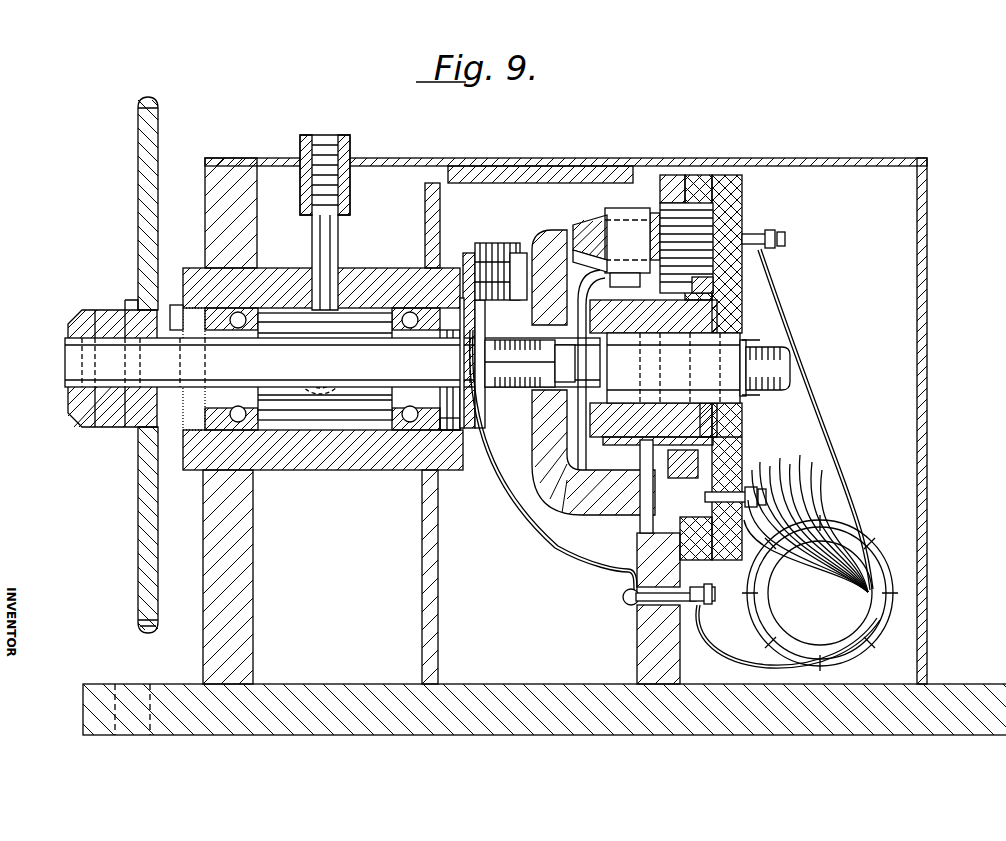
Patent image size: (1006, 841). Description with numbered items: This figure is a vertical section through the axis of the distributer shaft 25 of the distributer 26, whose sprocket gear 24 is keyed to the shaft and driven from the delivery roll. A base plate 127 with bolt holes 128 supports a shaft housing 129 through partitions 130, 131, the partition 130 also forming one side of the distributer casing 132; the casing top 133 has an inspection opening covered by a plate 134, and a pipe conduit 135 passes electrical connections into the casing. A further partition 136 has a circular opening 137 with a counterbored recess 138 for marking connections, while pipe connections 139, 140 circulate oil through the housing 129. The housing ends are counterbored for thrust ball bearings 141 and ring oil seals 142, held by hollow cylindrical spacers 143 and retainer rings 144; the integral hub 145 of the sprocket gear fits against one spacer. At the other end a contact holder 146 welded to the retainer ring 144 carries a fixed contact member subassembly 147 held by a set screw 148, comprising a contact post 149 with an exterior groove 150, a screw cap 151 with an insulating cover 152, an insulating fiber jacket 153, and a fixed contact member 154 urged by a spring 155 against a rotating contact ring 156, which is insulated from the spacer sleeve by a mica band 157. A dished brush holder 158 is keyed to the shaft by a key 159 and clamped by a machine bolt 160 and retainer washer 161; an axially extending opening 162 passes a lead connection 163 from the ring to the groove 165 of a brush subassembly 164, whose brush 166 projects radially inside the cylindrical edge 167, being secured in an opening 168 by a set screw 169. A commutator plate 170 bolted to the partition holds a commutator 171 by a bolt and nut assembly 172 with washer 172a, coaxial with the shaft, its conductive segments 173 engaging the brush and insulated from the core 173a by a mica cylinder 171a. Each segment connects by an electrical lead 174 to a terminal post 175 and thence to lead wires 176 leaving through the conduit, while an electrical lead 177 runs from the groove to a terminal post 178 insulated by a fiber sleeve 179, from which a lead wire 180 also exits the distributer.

The sprocket gear 24 is at (143, 143).
The distributer shaft 25 is at (90, 363).
The distributer 26 is at (730, 160).
The base plate 127 is at (596, 718).
The bolt holes 128 is at (123, 684).
The shaft housing 129 is at (333, 470).
The partition 130 is at (240, 575).
The partition 131 is at (438, 568).
The distributer casing 132 is at (927, 232).
The casing top 133 is at (812, 160).
The plate 134 is at (575, 157).
The pipe conduit 135 is at (848, 524).
The partition 136 is at (645, 630).
The circular opening 137 is at (653, 534).
The counterbored recess 138 is at (650, 556).
The pipe connection 139 is at (343, 243).
The pipe connection 140 is at (322, 406).
The thrust ball bearings 141 is at (410, 305).
The ring oil seals 142 is at (170, 311).
The hollow cylindrical spacers 143 is at (147, 433).
The retainer rings 144 is at (200, 268).
The integral hub 145 is at (94, 318).
The contact holder 146 is at (470, 255).
The fixed contact member subassembly 147 is at (538, 228).
The set screw 148 is at (521, 272).
The contact post 149 is at (478, 240).
The exterior groove 150 is at (530, 351).
The screw cap 151 is at (500, 253).
The cover 152 is at (489, 245).
The insulating fiber jacket 153 is at (466, 270).
The fixed contact member 154 is at (447, 350).
The spring 155 is at (487, 245).
The contact ring 156 is at (478, 449).
The band 157 is at (479, 471).
The brush holder 158 is at (532, 488).
The key 159 is at (595, 349).
The machine bolt 160 is at (578, 452).
The retainer washer 161 is at (586, 456).
The axially extending opening 162 is at (530, 368).
The electrical lead connection 163 is at (568, 204).
The brush subassembly 164 is at (621, 225).
The groove 165 is at (661, 303).
The brush 166 is at (618, 333).
The cylindrical edge 167 is at (607, 503).
The opening 168 is at (655, 218).
The set screw 169 is at (575, 246).
The commutator plate 170 is at (770, 461).
The commutator 171 is at (742, 424).
The mica cylinder 171a is at (742, 437).
The bolt and nut assembly 172 is at (734, 353).
The washer 172a is at (744, 333).
The conductive segments 173 is at (668, 456).
The core 173a is at (742, 408).
The electrical lead 174 is at (742, 268).
The terminal post 175 is at (773, 236).
The lead wires 176 is at (810, 361).
The electrical lead 177 is at (564, 559).
The terminal post 178 is at (711, 592).
The insulating fiber sleeve 179 is at (637, 595).
The electrical lead wire 180 is at (752, 651).